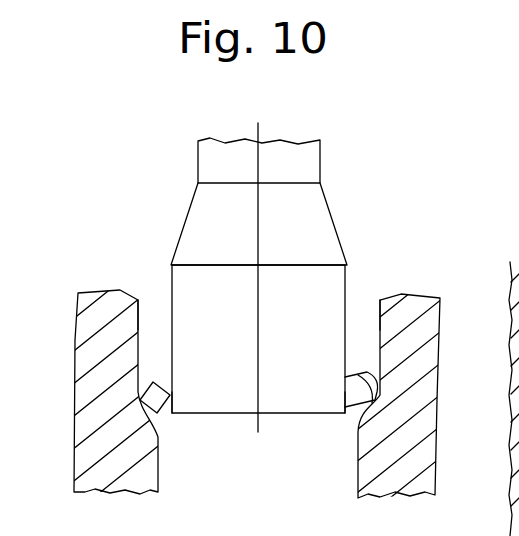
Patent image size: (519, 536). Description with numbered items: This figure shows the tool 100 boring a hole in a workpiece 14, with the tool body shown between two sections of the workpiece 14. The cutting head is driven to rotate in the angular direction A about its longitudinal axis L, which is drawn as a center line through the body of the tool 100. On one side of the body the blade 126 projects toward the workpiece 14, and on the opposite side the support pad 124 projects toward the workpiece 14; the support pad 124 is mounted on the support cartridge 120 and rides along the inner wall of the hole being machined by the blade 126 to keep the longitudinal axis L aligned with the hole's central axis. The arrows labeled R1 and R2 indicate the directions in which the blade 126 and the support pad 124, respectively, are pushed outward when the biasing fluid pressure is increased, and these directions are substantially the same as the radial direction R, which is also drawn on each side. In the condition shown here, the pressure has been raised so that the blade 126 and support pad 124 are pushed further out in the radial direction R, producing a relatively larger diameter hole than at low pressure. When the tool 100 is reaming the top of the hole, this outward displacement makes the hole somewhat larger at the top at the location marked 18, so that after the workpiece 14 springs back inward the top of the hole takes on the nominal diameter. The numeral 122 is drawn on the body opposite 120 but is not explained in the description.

The tool 100 is at (362, 208).
The workpiece 14 is at (89, 277).
The enlarged top of hole 18 is at (138, 315).
The support cartridge 120 is at (345, 392).
The lower left edge of insert 122 is at (172, 392).
The support pad 124 is at (372, 405).
The blade 126 is at (150, 407).
The longitudinal axis L is at (260, 130).
The angular direction A is at (266, 447).
The radial direction R is at (98, 412).
The R' direction R1 is at (98, 398).
The R" direction R2 is at (415, 400).